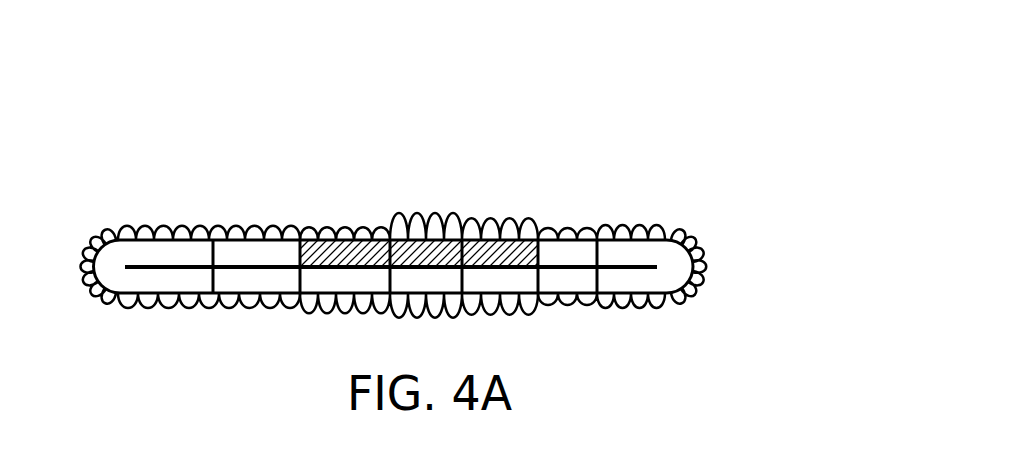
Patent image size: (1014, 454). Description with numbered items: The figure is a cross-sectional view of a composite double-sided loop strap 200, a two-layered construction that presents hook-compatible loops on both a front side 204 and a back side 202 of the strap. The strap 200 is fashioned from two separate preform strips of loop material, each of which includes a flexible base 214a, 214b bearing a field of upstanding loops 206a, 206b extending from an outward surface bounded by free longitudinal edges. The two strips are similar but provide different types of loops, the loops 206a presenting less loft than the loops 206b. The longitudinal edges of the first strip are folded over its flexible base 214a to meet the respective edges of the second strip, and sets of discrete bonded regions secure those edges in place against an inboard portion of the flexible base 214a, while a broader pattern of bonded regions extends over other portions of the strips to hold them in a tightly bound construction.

The double-sided loop strap 200 is at (633, 122).
The back side 202 is at (95, 199).
The front side 204 is at (661, 330).
The loops 206a is at (652, 223).
The loops 206b is at (503, 220).
The flexible base 214a is at (237, 252).
The flexible base 214b is at (372, 250).